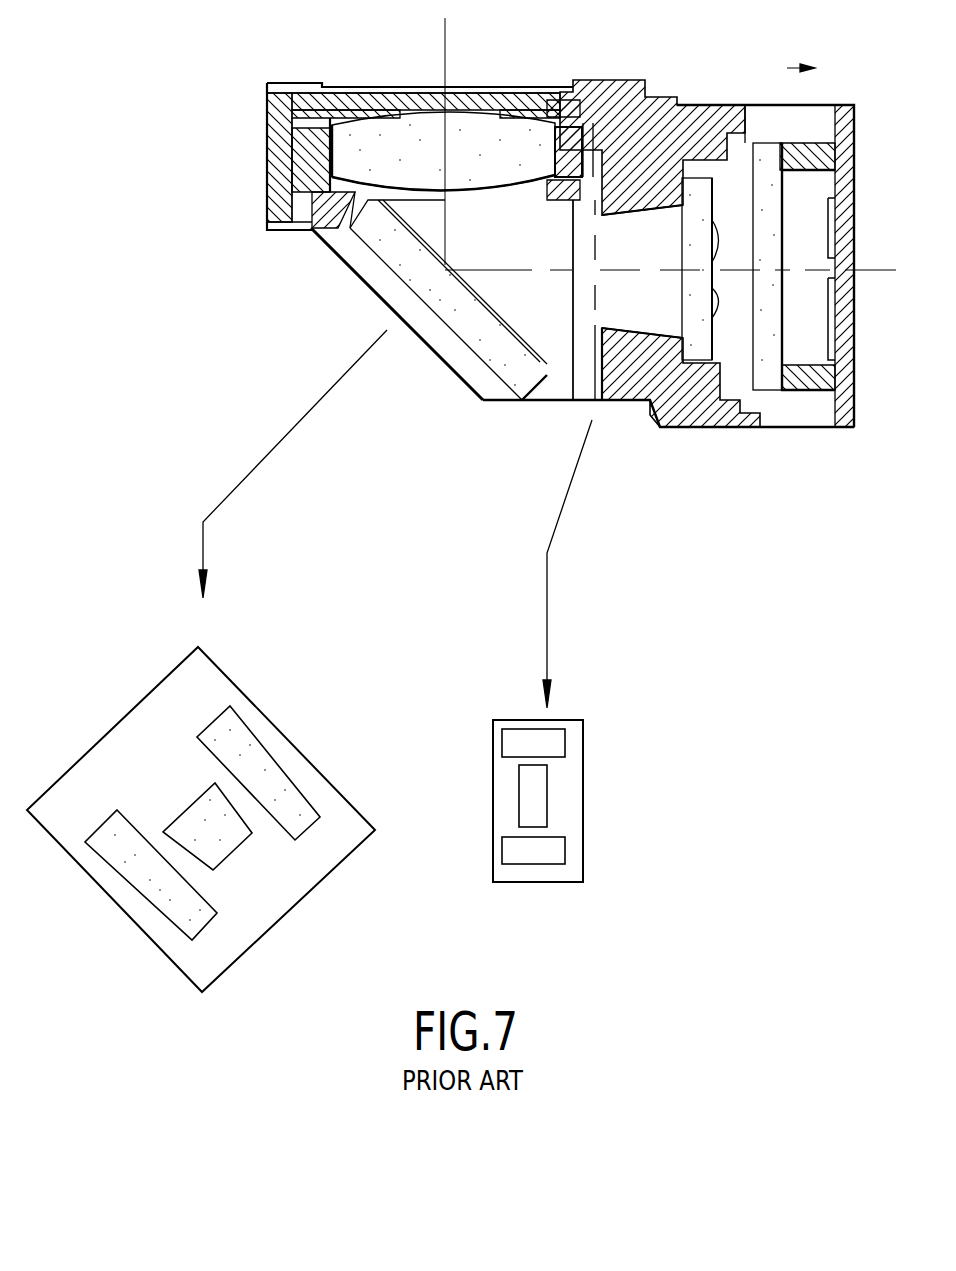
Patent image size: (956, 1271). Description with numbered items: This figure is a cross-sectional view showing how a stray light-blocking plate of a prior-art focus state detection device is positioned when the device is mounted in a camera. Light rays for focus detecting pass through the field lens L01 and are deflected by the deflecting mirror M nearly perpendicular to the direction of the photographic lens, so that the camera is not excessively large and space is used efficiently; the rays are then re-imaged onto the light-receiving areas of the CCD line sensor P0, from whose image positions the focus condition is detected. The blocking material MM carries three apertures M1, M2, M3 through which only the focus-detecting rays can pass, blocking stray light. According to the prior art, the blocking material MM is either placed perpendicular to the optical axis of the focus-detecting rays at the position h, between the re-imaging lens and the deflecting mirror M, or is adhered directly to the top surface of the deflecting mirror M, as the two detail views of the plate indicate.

The field lens L01 is at (413, 133).
The CCD line sensor P0 is at (835, 203).
The deflecting mirror M is at (502, 372).
The position h is at (598, 400).
The blocking material MM is at (215, 667).
The aperture M1 is at (232, 853).
The aperture M2 is at (258, 733).
The aperture M3 is at (565, 864).